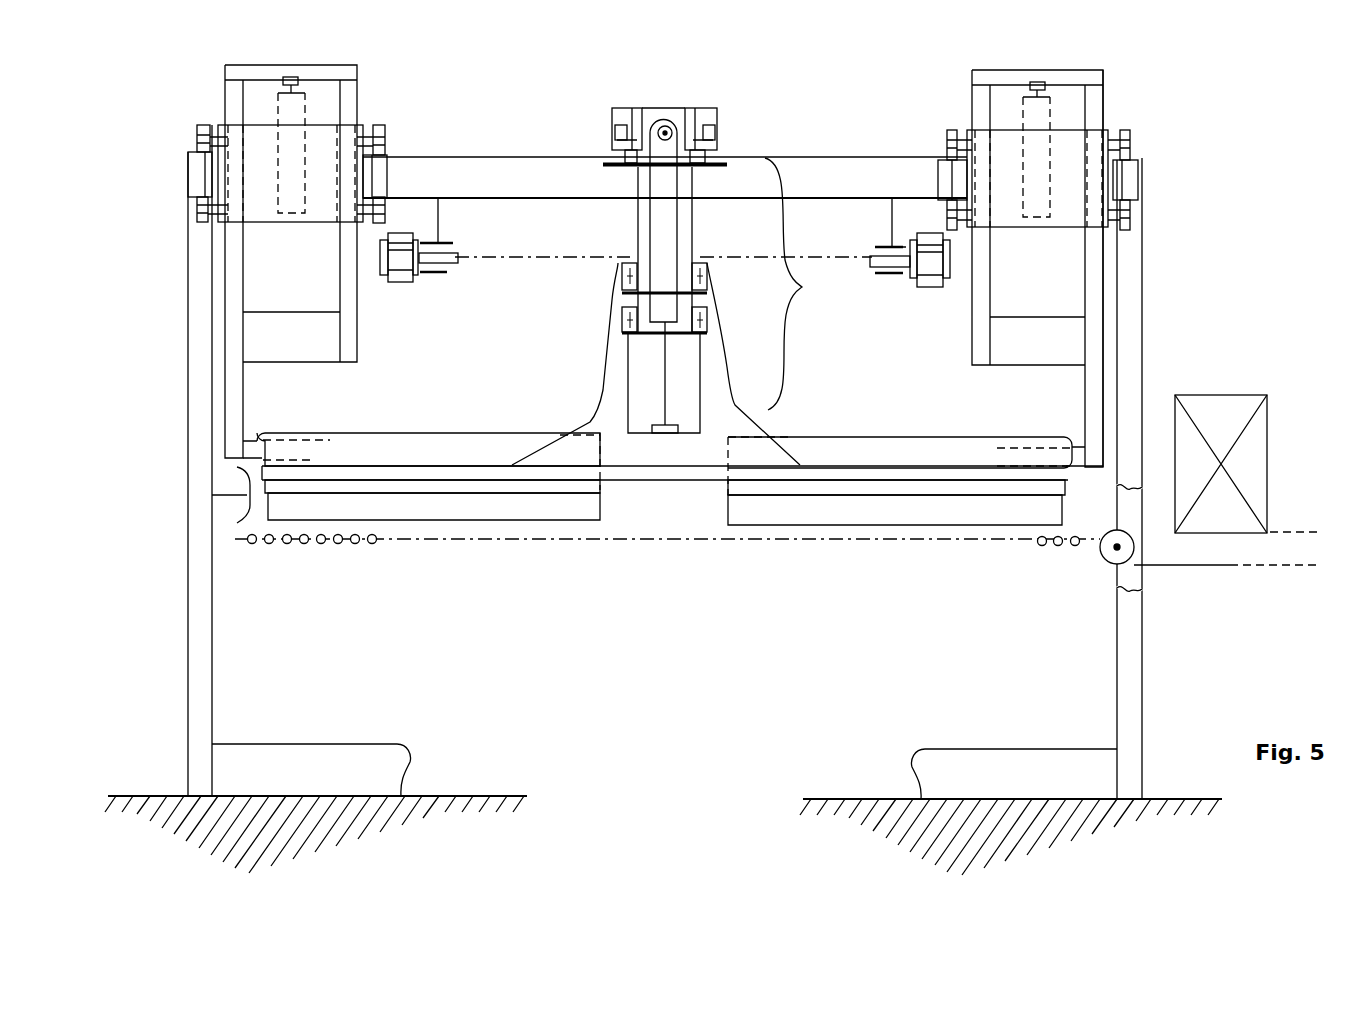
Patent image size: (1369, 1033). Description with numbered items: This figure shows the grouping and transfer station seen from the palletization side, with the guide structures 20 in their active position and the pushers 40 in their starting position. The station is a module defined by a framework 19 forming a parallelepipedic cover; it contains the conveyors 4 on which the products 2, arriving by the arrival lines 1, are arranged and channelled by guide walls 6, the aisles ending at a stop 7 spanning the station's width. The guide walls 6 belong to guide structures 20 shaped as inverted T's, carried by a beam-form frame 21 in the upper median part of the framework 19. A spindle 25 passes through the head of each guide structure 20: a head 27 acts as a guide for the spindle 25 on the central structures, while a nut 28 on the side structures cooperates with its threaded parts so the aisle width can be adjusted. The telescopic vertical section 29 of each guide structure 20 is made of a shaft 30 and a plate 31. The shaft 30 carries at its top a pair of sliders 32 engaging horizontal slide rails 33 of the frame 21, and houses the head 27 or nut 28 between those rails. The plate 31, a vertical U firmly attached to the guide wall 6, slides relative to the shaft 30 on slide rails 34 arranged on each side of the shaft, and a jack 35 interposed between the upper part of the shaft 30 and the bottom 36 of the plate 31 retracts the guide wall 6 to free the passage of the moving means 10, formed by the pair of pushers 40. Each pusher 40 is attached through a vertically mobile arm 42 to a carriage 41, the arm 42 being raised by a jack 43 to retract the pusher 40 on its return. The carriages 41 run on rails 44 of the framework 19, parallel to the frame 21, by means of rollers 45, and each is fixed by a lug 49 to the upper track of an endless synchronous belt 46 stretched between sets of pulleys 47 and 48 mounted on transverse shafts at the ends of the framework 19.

The arrival line 1 is at (1280, 525).
The product 2 is at (1238, 395).
The conveyor 4 is at (340, 545).
The guide wall 6 is at (690, 500).
The stop 7 is at (245, 512).
The means of moving the batches of products 10 is at (664, 474).
The framework 19 is at (508, 150).
The guide structure 20 is at (605, 300).
The frame 21 is at (660, 105).
The spindle 25 is at (668, 125).
The head 27 is at (617, 104).
The nut 28 is at (660, 120).
The vertical section 29 is at (799, 284).
The shaft 30 is at (692, 222).
The plate 31 is at (733, 367).
The slider 32 is at (612, 115).
The slide rail 33 is at (615, 134).
The slide rail 34 is at (707, 320).
The jack 35 is at (660, 222).
The bottom 36 is at (687, 432).
The pusher 40 is at (455, 433).
The carriage 41 is at (345, 130).
The arm 42 is at (245, 388).
The jack 43 is at (283, 100).
The rail 44 is at (205, 175).
The roller 45 is at (198, 135).
The endless belt 46 is at (400, 285).
The pulley 47 is at (664, 289).
The pulley 48 is at (432, 278).
The lug 49 is at (892, 215).